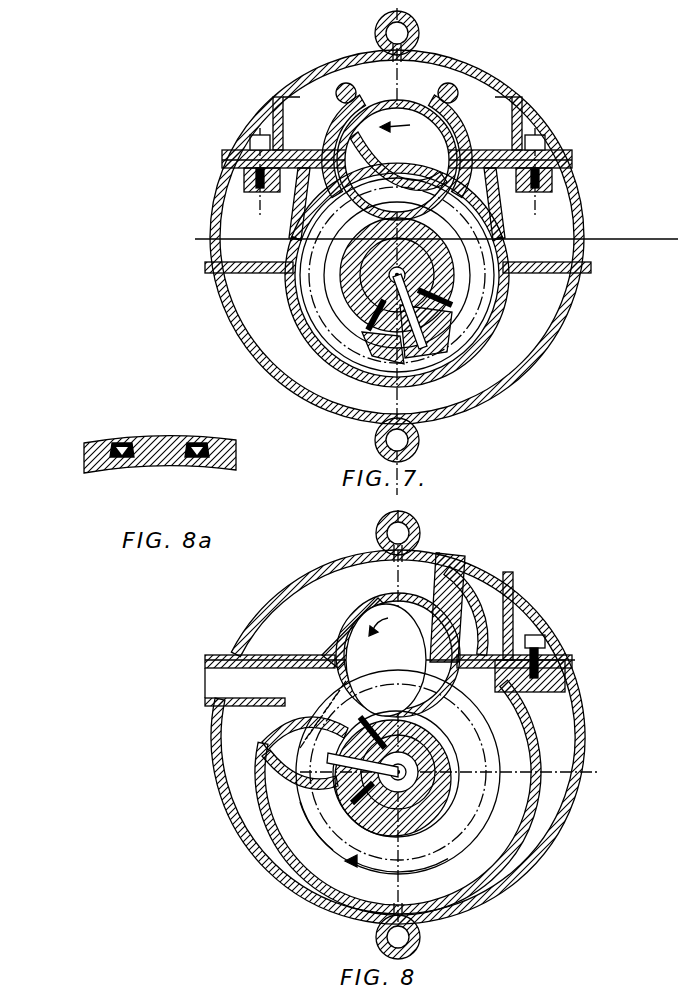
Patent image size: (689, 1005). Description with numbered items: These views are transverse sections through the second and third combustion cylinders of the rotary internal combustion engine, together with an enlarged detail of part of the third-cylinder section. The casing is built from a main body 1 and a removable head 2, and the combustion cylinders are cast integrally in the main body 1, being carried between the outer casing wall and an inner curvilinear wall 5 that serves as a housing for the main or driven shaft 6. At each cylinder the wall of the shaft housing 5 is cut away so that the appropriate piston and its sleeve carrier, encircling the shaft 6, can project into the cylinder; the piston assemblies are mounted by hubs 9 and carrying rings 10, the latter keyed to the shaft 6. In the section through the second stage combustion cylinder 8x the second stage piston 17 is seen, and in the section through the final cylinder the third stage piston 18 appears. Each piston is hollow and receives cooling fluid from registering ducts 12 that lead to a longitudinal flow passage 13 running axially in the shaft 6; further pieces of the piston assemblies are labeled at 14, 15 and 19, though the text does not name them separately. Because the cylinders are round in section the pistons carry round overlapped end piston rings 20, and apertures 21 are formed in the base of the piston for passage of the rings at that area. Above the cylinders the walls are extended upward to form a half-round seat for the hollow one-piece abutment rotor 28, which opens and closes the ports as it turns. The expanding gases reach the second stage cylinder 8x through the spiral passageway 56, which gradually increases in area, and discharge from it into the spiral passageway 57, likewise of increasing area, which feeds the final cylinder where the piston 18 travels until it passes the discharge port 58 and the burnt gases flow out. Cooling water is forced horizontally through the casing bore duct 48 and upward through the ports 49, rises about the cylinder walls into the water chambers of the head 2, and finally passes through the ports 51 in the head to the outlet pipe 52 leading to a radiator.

In FIG. 7, the casing main body 1 is at (574, 290).
In FIG. 8, the casing main body 1 is at (574, 783).
In FIG. 7, the removable head 2 is at (505, 88).
In FIG. 8, the removable head 2 is at (503, 590).
In FIG. 7, the inner wall 5 is at (468, 266).
In FIG. 8, the inner wall 5 is at (450, 800).
In FIG. 7, the main or driven shaft 6 is at (440, 245).
In FIG. 8, the main or driven shaft 6 is at (430, 772).
In FIG. 7, the second stage combustion cylinder 8x is at (492, 240).
In FIG. 8, the second stage combustion cylinder 8x is at (523, 742).
In FIG. 7, the hubs 9 is at (455, 235).
In FIG. 8, the hubs 9 is at (430, 752).
In FIG. 7, the carrying rings 10 is at (420, 235).
In FIG. 8, the carrying rings 10 is at (460, 748).
In FIG. 7, the registering ducts 12 is at (385, 345).
In FIG. 8, the registering ducts 12 is at (340, 745).
In FIG. 7, the longitudinal flow passage 13 is at (355, 318).
In FIG. 8, the longitudinal flow passage 13 is at (385, 818).
In FIG. 7, the pin 14 is at (455, 315).
In FIG. 8, the pin 15 is at (366, 723).
In FIG. 7, the second stage piston 17 is at (447, 347).
In FIG. 8A, the third stage piston 18 is at (118, 470).
In FIG. 8, the third stage piston 18 is at (317, 719).
In FIG. 7, the vane 19 is at (370, 345).
In FIG. 8, the vane 19 is at (352, 803).
In FIG. 8A, the piston rings 20 is at (133, 440).
In FIG. 8, the piston rings 20 is at (262, 738).
In FIG. 8, the apertures 21 is at (330, 758).
In FIG. 7, the abutment rotor 28 is at (350, 185).
In FIG. 8, the abutment rotor 28 is at (398, 655).
In FIG. 7, the casing bore duct 48 is at (419, 441).
In FIG. 8, the casing bore duct 48 is at (420, 937).
In FIG. 8, the ports 49 is at (398, 905).
In FIG. 7, the ports 51 is at (397, 73).
In FIG. 8, the ports 51 is at (398, 570).
In FIG. 7, the outlet pipe 52 is at (420, 32).
In FIG. 8, the outlet pipe 52 is at (420, 533).
In FIG. 7, the spiral passageway 56 is at (458, 140).
In FIG. 7, the spiral passageway 57 is at (335, 140).
In FIG. 8, the spiral passageway 57 is at (466, 610).
In FIG. 8, the discharge port 58 is at (230, 683).